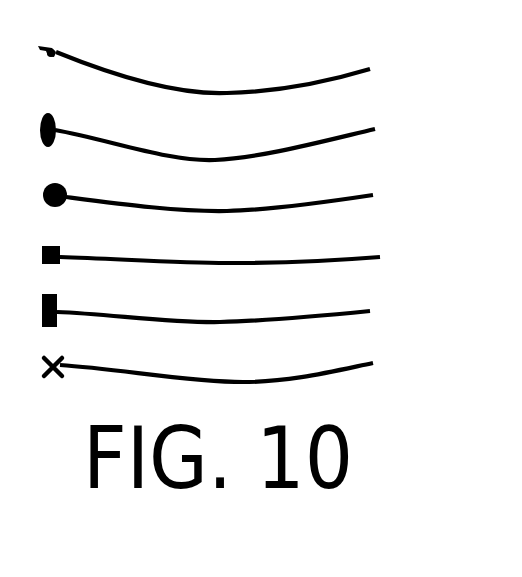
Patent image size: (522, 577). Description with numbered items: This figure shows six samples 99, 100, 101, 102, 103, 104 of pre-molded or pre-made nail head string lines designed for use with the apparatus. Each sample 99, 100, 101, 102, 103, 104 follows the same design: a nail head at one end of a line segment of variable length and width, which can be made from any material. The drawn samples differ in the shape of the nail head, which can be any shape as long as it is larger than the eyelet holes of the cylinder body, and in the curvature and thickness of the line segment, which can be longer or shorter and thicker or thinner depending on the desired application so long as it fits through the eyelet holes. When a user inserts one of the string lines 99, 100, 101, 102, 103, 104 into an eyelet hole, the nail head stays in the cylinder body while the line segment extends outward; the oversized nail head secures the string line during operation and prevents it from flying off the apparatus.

The pre-molded nail head string line sample 99 is at (330, 82).
The pre-molded nail head string line sample 100 is at (348, 138).
The pre-molded nail head string line sample 101 is at (352, 203).
The pre-molded nail head string line sample 102 is at (347, 262).
The pre-molded nail head string line sample 103 is at (345, 315).
The pre-molded nail head string line sample 104 is at (340, 373).